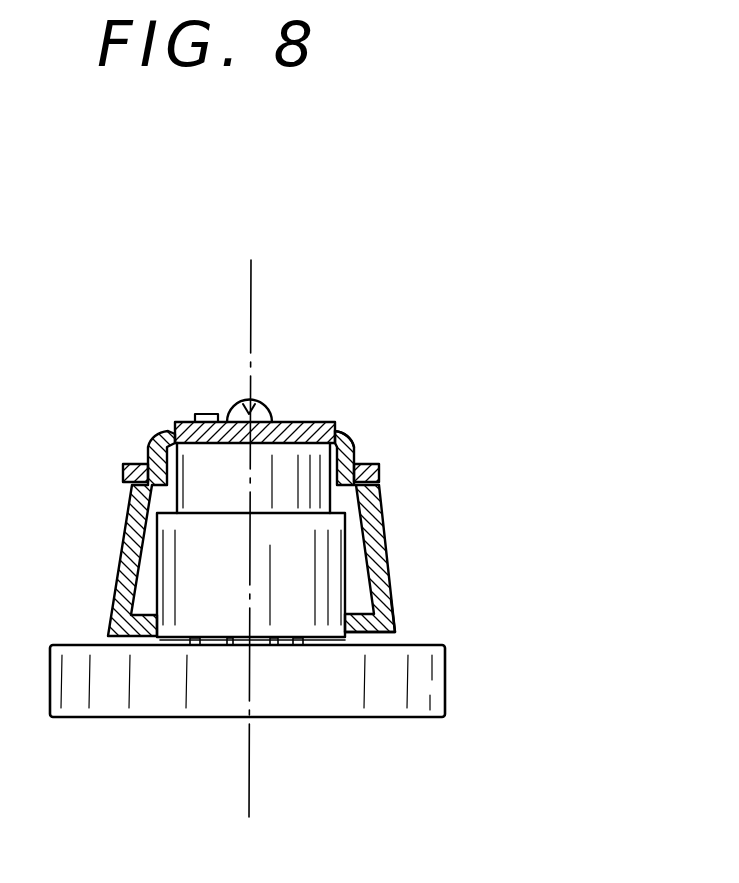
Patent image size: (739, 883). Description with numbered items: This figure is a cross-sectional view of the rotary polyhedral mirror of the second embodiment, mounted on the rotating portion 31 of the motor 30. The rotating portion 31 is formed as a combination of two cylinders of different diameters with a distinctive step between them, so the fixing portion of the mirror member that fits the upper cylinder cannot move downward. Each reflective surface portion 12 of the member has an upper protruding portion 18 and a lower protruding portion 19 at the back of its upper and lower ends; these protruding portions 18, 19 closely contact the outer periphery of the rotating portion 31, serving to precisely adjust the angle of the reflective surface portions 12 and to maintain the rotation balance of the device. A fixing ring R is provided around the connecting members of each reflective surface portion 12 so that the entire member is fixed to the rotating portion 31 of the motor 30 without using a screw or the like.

The fixing ring R is at (369, 462).
The reflective surface portion 12 is at (379, 507).
The upper protruding portion 18 is at (379, 483).
The lower protruding portion 19 is at (386, 633).
The motor 30 is at (417, 687).
The rotating portion 31 is at (323, 580).